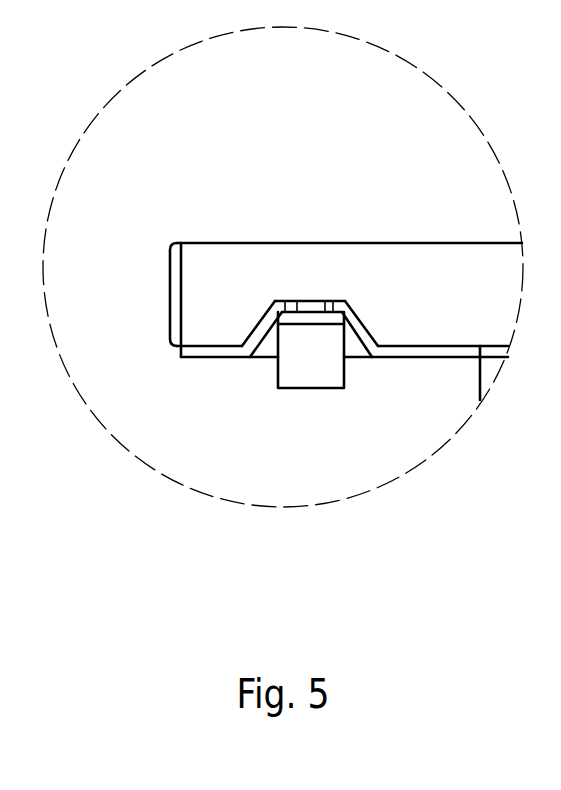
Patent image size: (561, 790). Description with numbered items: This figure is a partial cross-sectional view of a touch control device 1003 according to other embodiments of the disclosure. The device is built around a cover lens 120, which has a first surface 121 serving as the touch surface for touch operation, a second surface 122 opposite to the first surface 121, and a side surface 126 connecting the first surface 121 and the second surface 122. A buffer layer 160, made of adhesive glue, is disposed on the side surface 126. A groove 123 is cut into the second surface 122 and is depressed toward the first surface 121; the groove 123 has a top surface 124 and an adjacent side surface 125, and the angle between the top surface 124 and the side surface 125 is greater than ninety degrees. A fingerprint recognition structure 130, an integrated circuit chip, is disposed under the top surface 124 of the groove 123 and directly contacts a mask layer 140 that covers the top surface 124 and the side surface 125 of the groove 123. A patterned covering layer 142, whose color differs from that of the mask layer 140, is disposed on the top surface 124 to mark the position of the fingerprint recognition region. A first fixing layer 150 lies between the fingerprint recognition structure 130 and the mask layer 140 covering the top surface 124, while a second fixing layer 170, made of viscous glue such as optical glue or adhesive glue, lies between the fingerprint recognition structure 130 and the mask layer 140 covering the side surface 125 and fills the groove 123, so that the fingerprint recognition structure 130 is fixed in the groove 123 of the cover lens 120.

The touch control device 1003 is at (168, 226).
The cover lens 120 is at (443, 103).
The first surface 121 is at (308, 243).
The second surface 122 is at (205, 346).
The groove 123 is at (478, 158).
The top surface 124 is at (312, 301).
The side surface 125 is at (363, 325).
The side surface 126 is at (191, 257).
The fingerprint recognition structure 130 is at (312, 368).
The mask layer 140 is at (425, 357).
The patterned covering layer 142 is at (283, 307).
The first fixing layer 150 is at (318, 317).
The buffer layer 160 is at (172, 292).
The second fixing layer 170 is at (267, 347).